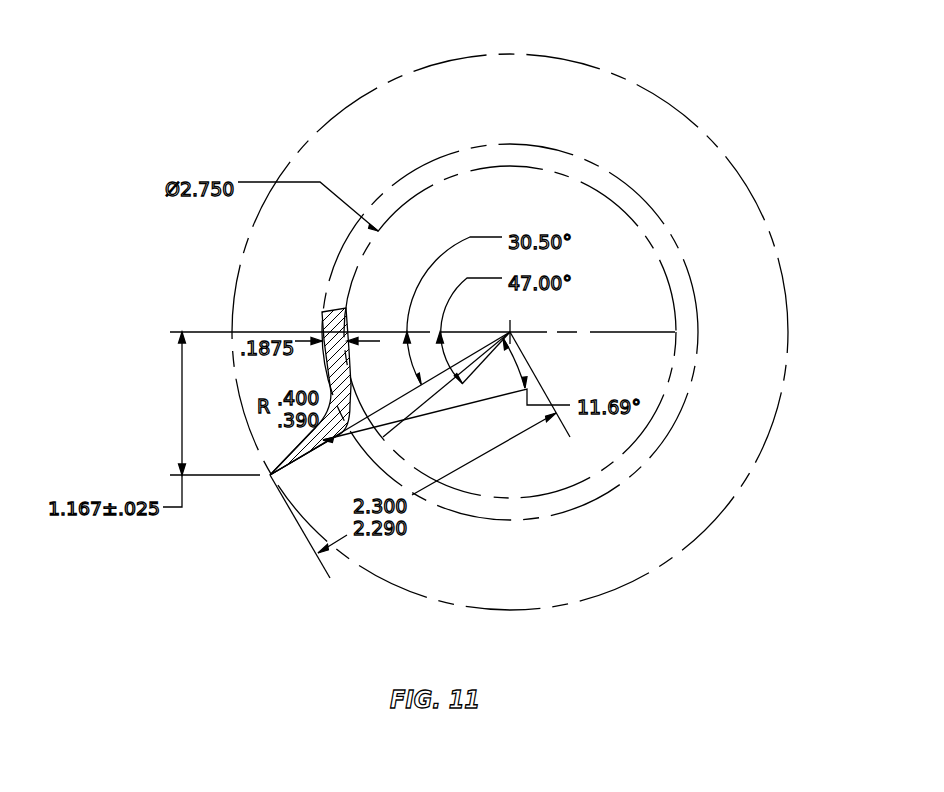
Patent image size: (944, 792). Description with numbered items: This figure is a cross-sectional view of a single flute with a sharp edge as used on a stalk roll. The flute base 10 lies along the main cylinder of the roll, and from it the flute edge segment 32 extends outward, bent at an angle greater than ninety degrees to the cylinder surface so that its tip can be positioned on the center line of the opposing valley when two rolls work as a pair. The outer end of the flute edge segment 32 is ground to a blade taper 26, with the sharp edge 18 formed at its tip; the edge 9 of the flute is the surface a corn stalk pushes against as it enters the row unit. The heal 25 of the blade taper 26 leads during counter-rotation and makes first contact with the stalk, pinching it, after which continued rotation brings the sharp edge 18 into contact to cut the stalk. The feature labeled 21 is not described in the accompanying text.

The flute base 10 is at (326, 320).
The flute edge segment 32 is at (303, 452).
The rake face line 21 is at (383, 438).
The heal 25 is at (272, 455).
The blade taper 26 is at (280, 463).
The edge 9 is at (345, 438).
The sharp edge 18 is at (270, 477).